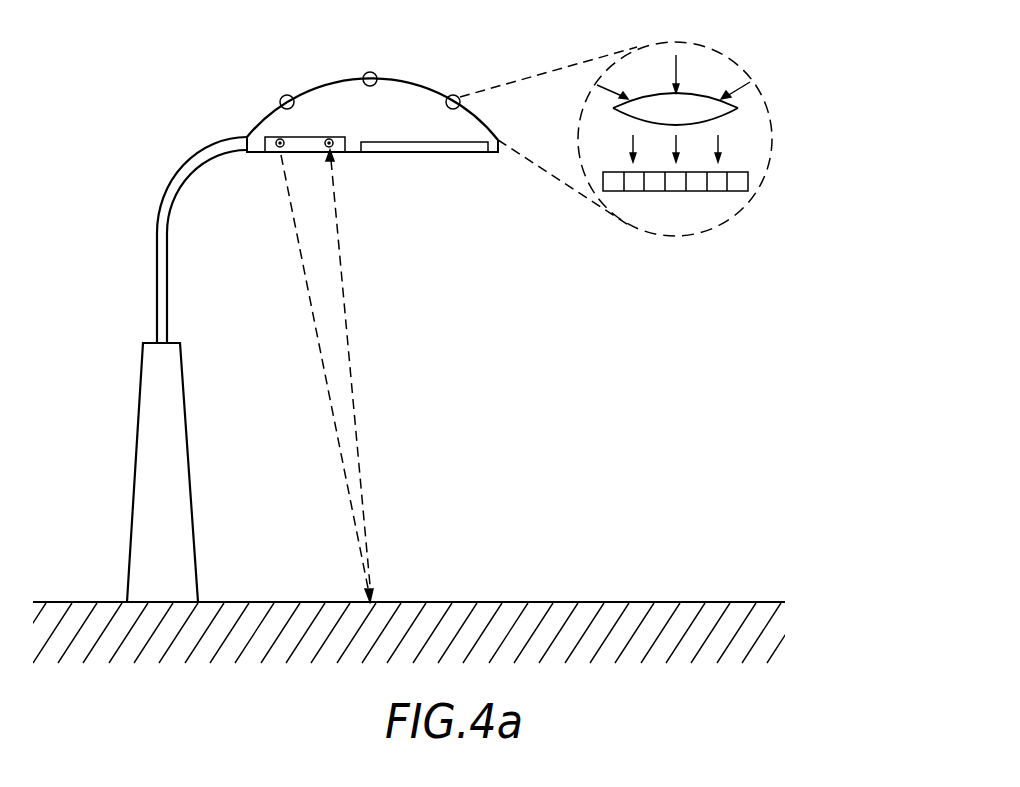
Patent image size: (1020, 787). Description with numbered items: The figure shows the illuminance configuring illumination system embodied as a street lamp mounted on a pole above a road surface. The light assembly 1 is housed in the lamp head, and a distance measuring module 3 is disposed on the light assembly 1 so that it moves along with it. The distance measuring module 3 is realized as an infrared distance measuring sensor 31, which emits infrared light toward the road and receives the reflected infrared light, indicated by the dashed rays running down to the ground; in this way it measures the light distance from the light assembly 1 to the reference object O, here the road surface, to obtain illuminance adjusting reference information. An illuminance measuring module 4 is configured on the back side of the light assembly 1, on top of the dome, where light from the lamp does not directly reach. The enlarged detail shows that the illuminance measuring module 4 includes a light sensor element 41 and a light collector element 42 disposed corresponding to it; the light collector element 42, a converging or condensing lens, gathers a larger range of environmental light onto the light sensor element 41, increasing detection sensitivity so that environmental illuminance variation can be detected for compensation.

The light assembly 1 is at (420, 146).
The distance measuring module 3 is at (338, 150).
The infrared distance measuring sensor 31 is at (278, 150).
The illuminance measuring module 4 is at (284, 96).
The light sensor element 41 is at (718, 181).
The light collector element 42 is at (738, 106).
The reference object O is at (532, 602).